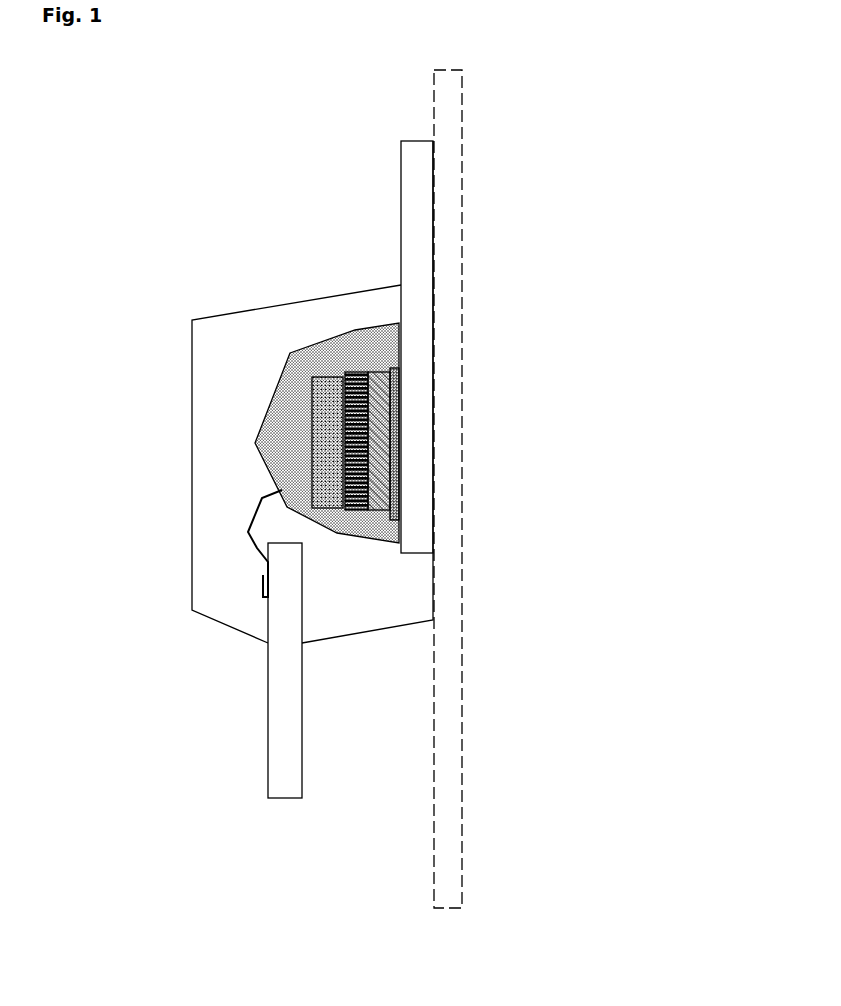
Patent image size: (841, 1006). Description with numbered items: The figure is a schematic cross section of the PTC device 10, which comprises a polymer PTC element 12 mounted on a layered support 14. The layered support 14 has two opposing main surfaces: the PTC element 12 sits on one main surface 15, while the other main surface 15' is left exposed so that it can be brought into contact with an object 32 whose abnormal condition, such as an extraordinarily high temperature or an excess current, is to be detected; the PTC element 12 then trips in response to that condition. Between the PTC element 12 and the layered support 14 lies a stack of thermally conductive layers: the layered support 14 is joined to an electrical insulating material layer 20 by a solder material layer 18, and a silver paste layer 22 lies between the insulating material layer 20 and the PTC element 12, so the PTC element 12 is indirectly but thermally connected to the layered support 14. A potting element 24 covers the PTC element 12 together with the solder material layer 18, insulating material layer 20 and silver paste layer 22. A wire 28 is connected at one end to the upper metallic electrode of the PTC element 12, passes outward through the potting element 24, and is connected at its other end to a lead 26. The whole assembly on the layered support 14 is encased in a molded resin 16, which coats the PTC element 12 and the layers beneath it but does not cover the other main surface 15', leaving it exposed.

The PTC device 10 is at (116, 241).
The PTC element 12 is at (333, 472).
The layered support 14 is at (508, 489).
The main surface 15 is at (336, 328).
The main surface 15' is at (503, 347).
The molded resin 16 is at (255, 464).
The solder material layer 18 is at (402, 382).
The insulating material layer 20 is at (400, 437).
The silver paste layer 22 is at (400, 505).
The potting element 24 is at (327, 364).
The lead 26 is at (215, 692).
The wire 28 is at (247, 550).
The object 32 is at (520, 637).